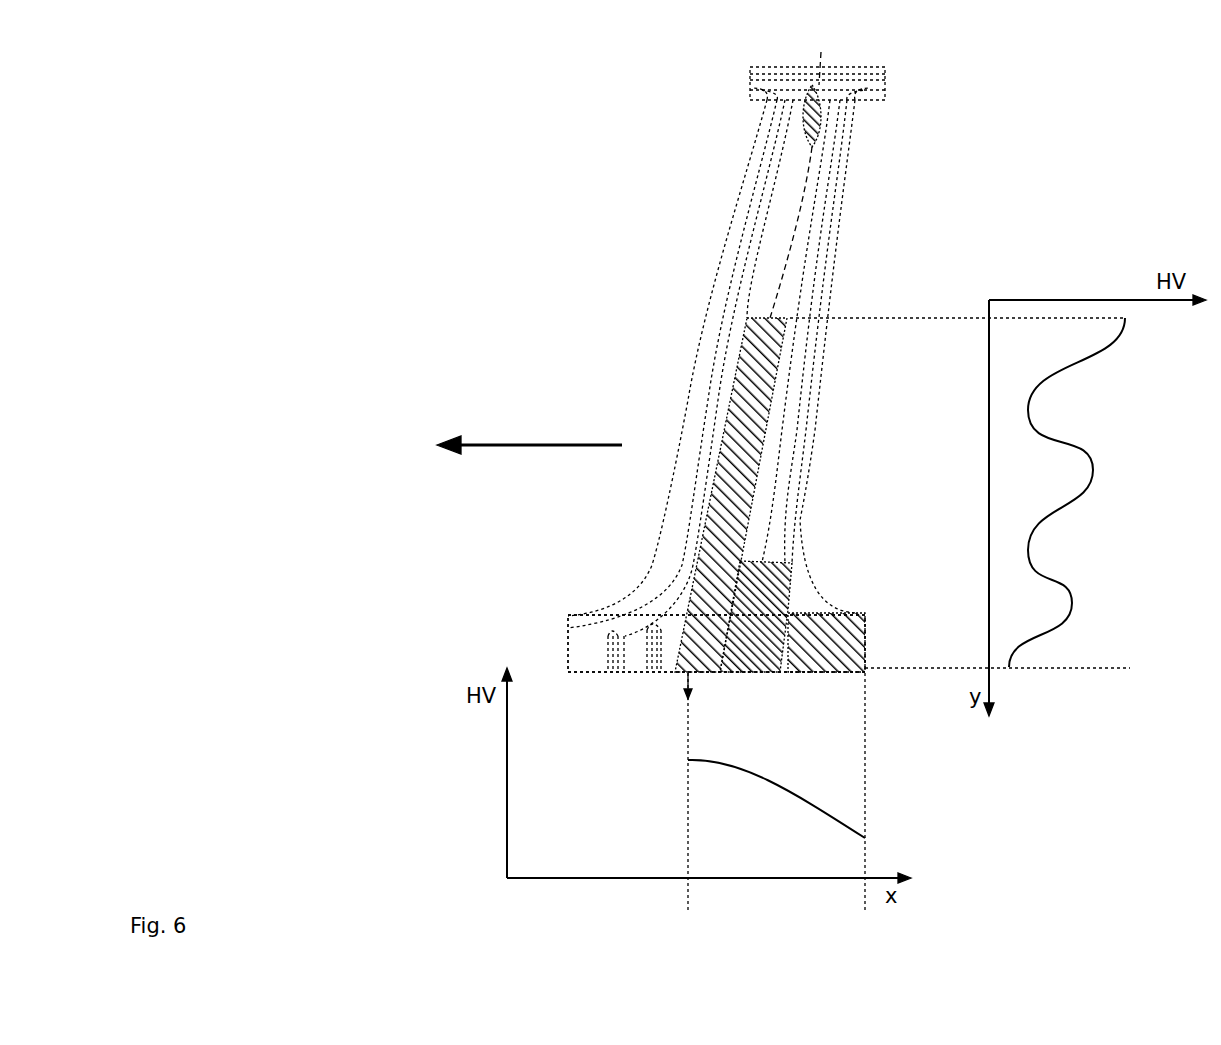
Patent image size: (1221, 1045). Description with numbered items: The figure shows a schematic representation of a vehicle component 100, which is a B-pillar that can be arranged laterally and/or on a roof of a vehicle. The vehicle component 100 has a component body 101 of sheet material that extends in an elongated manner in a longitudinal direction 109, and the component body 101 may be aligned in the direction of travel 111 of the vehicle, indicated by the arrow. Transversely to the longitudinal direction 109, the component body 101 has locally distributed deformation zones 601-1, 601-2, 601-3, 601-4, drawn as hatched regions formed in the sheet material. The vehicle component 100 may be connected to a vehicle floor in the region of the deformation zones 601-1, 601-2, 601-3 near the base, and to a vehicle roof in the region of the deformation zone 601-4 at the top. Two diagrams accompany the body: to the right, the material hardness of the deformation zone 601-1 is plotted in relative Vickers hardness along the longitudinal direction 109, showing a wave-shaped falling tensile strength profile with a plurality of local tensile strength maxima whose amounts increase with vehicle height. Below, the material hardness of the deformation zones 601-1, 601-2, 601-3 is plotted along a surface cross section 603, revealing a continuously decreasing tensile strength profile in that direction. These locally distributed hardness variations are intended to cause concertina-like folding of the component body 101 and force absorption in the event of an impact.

The vehicle component 100 is at (607, 223).
The component body 101 is at (831, 201).
The longitudinal direction 109 is at (808, 174).
The direction of travel 111 is at (529, 434).
The deformation zone 601-1 is at (786, 347).
The deformation zone 601-2 is at (764, 553).
The deformation zone 601-3 is at (811, 624).
The deformation zone 601-4 is at (816, 110).
The surface cross section 603 is at (687, 613).